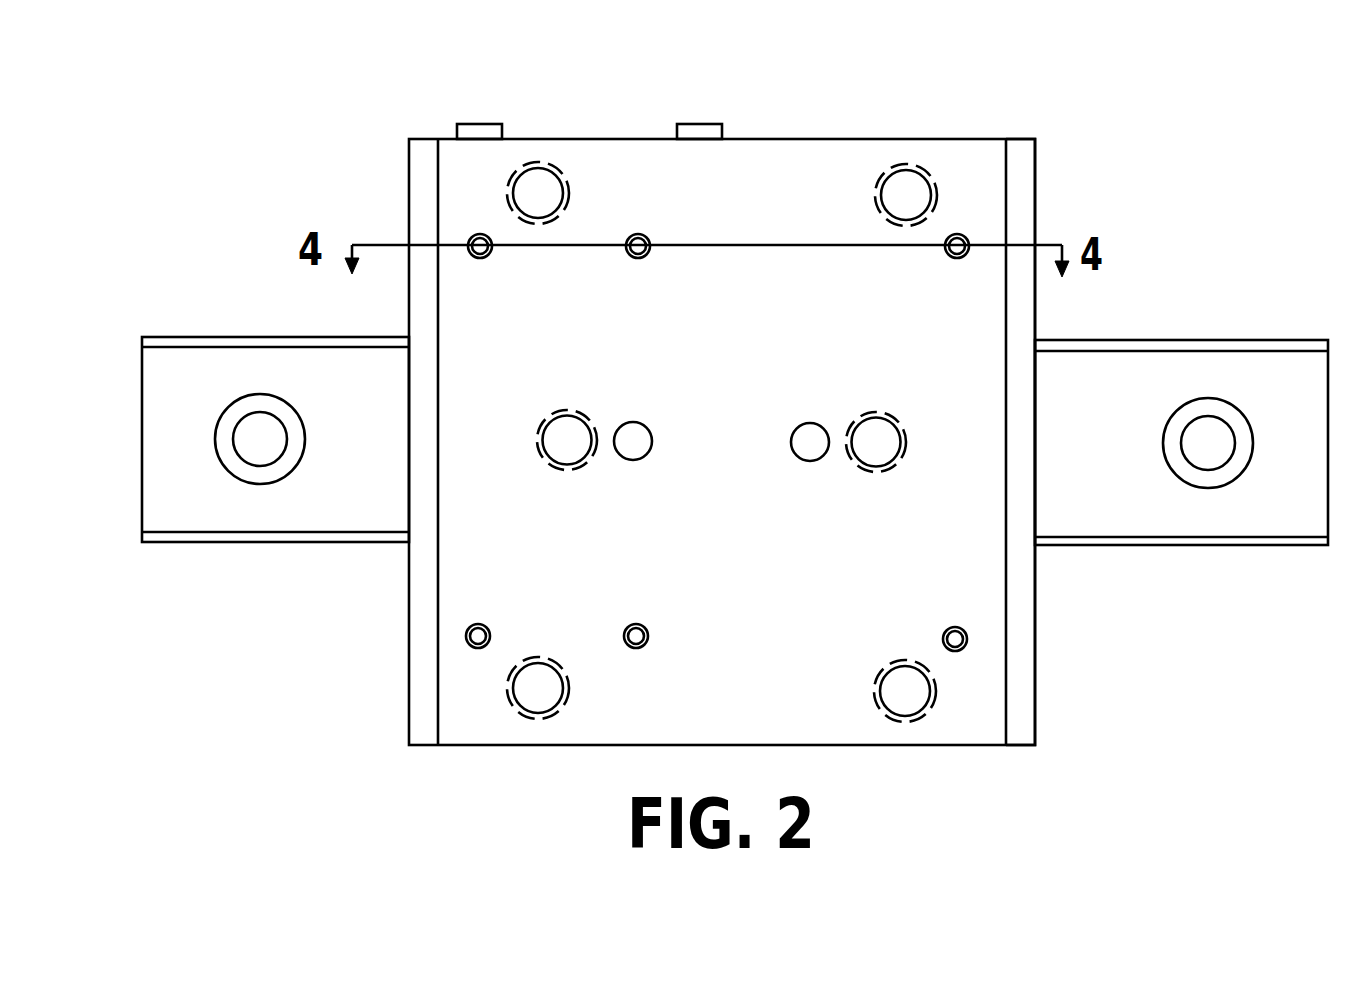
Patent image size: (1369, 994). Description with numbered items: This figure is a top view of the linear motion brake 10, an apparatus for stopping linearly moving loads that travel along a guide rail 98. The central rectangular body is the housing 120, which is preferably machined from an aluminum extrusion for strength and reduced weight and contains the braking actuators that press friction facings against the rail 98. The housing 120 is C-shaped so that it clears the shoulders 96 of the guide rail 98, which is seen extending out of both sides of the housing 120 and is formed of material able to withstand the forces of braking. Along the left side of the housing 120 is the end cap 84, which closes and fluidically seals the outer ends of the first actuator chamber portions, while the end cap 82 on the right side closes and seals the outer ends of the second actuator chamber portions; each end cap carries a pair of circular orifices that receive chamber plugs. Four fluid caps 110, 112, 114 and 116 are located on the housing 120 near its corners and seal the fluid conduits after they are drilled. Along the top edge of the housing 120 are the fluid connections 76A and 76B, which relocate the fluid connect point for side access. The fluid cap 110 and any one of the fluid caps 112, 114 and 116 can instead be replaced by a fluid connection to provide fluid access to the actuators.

The brake 10 is at (296, 168).
The fluid connection 76A is at (480, 124).
The fluid connection 76B is at (722, 126).
The end cap 82 is at (1017, 698).
The end cap 84 is at (422, 718).
The shoulders 96 is at (223, 542).
The guide rail 98 is at (203, 390).
The fluid cap 110 is at (538, 193).
The fluid cap 112 is at (904, 196).
The fluid cap 114 is at (538, 688).
The fluid cap 116 is at (905, 691).
The housing 120 is at (965, 191).